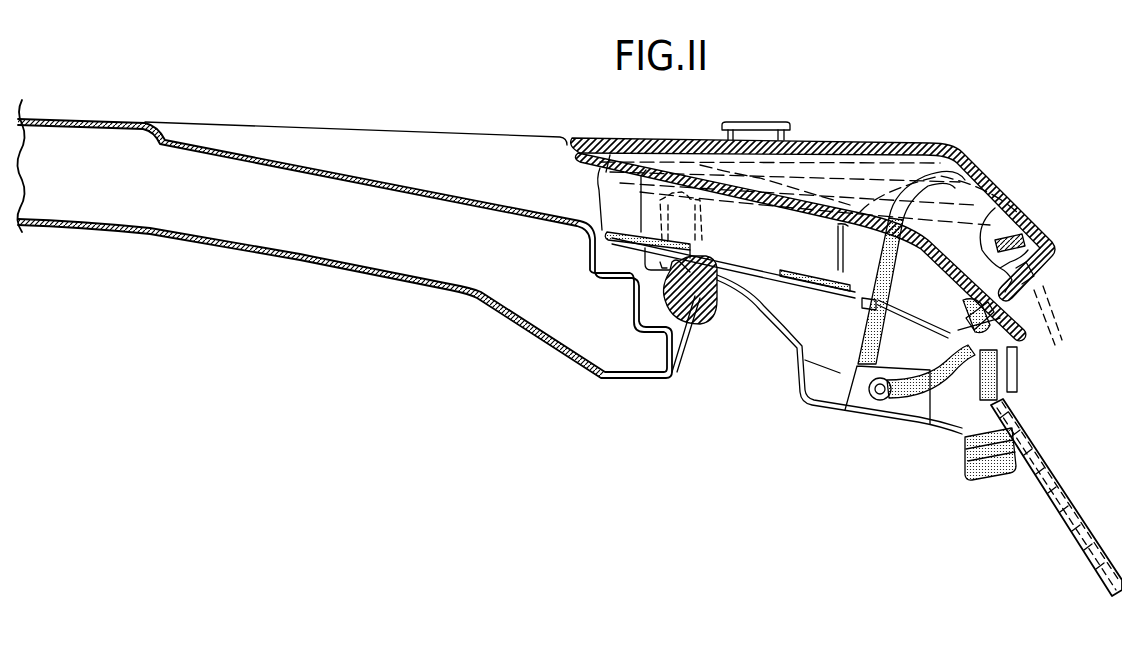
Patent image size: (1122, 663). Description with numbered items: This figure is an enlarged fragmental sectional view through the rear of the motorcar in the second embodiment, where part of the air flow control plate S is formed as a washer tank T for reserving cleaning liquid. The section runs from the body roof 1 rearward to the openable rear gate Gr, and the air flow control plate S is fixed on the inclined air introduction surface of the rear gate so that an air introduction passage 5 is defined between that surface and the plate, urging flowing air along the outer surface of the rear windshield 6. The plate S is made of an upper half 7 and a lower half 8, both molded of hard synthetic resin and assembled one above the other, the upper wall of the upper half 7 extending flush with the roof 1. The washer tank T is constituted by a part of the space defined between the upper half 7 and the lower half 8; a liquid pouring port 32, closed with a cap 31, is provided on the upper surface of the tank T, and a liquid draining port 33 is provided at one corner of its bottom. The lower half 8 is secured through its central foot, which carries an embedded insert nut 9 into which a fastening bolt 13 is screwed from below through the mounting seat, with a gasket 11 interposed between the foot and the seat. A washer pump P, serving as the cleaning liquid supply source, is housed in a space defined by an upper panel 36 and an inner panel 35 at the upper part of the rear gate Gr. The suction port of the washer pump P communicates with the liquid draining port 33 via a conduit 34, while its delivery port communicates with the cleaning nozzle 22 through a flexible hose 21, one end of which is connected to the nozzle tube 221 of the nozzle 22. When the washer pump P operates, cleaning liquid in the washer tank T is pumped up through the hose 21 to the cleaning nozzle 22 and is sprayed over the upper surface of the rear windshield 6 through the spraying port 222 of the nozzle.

The body roof 1 is at (83, 120).
The air introduction passage 5 is at (635, 201).
The rear windshield 6 is at (1076, 521).
The upper half 7 is at (612, 160).
The lower half 8 is at (640, 217).
The insert nut 9 is at (692, 228).
The gasket 11 is at (762, 262).
The fastening bolt 13 is at (645, 263).
The flexible hose 21 is at (886, 254).
The cleaning nozzle 22 is at (1050, 248).
The nozzle tube 221 is at (1022, 232).
The spraying port 222 is at (1032, 281).
The cap 31 is at (748, 128).
The liquid pouring port 32 is at (712, 120).
The liquid draining port 33 is at (972, 308).
The conduit 34 is at (940, 362).
The inner panel 35 is at (763, 332).
The upper panel 36 is at (815, 274).
The air flow control plate S is at (601, 168).
The washer tank T is at (967, 178).
The washer pump P is at (867, 410).
The rear gate Gr is at (1008, 410).